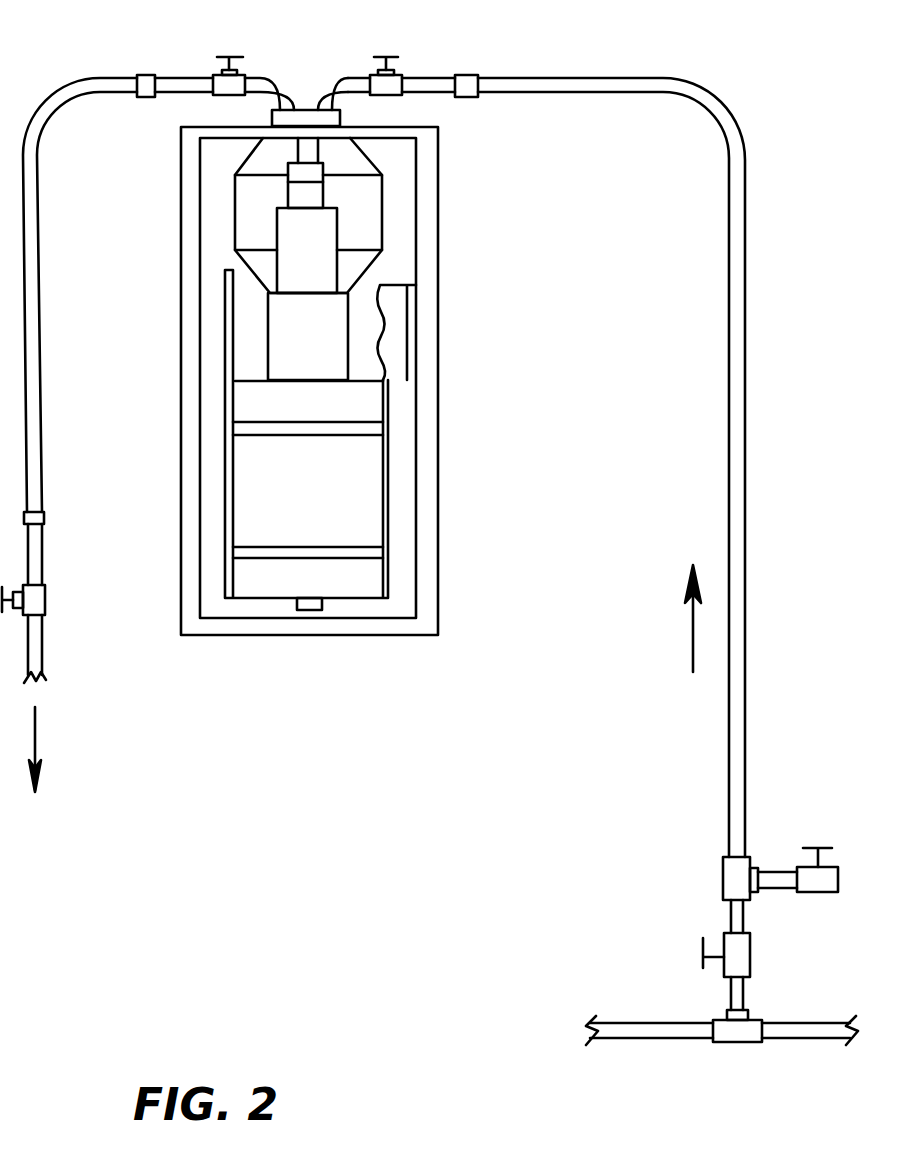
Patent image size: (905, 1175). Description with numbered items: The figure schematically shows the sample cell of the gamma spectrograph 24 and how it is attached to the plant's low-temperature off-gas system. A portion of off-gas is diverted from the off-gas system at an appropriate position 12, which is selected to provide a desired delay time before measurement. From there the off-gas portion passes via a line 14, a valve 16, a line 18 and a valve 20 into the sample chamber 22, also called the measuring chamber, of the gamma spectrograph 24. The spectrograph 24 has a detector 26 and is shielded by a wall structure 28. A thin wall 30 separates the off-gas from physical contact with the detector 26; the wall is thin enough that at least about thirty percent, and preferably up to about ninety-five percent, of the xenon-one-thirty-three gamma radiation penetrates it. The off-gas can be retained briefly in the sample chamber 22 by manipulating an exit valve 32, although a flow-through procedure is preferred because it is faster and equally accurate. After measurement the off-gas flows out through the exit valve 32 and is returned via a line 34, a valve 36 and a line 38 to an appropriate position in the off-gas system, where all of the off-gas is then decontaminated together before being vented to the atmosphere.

The position 12 is at (738, 1035).
The line 14 is at (743, 991).
The valve 16 is at (750, 955).
The line 18 is at (628, 81).
The valve 20 is at (400, 73).
The sample chamber 22 is at (308, 120).
The gamma spectrograph 24 is at (258, 353).
The detector 26 is at (317, 180).
The wall structure 28 is at (383, 228).
The thin wall 30 is at (293, 133).
The exit valve 32 is at (213, 77).
The line 34 is at (32, 117).
The valve 36 is at (45, 598).
The line 38 is at (42, 645).